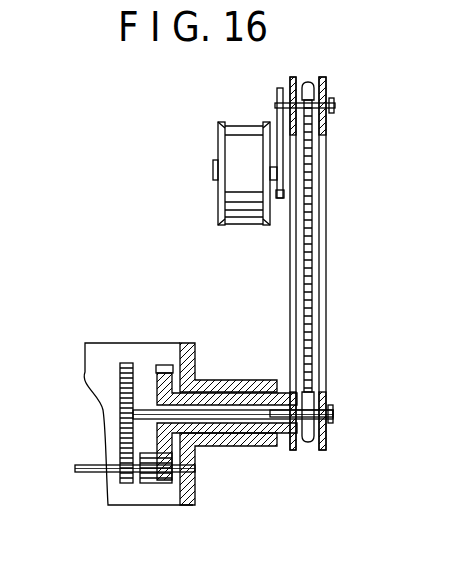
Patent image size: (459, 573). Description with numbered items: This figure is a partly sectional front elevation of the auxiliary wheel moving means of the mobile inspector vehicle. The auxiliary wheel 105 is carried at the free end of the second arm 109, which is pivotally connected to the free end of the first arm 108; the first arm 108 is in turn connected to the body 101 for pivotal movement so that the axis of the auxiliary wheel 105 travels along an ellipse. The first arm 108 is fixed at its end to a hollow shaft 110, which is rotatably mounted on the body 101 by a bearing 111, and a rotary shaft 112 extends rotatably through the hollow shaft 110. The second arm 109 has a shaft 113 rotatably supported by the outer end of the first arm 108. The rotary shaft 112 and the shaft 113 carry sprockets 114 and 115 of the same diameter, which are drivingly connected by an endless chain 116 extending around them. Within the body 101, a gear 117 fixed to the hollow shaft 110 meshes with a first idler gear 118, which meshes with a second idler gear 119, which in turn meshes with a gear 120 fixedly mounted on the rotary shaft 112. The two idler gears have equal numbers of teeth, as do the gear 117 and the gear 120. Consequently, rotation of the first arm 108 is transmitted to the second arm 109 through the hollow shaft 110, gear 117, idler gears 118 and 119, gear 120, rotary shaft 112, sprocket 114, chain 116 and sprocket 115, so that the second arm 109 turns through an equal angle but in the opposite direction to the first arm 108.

The body 101 is at (103, 409).
The auxiliary wheel 105 is at (233, 143).
The first arm 108 is at (326, 170).
The second arm 109 is at (278, 112).
The hollow shaft 110 is at (265, 380).
The bearing 111 is at (222, 381).
The rotary shaft 112 is at (229, 446).
The shaft 113 is at (334, 108).
The sprocket 114 is at (323, 436).
The sprocket 115 is at (329, 94).
The endless chain 116 is at (304, 268).
The gear 117 is at (163, 365).
The first idler gear 118 is at (162, 503).
The second idler gear 119 is at (132, 505).
The gear 120 is at (120, 384).